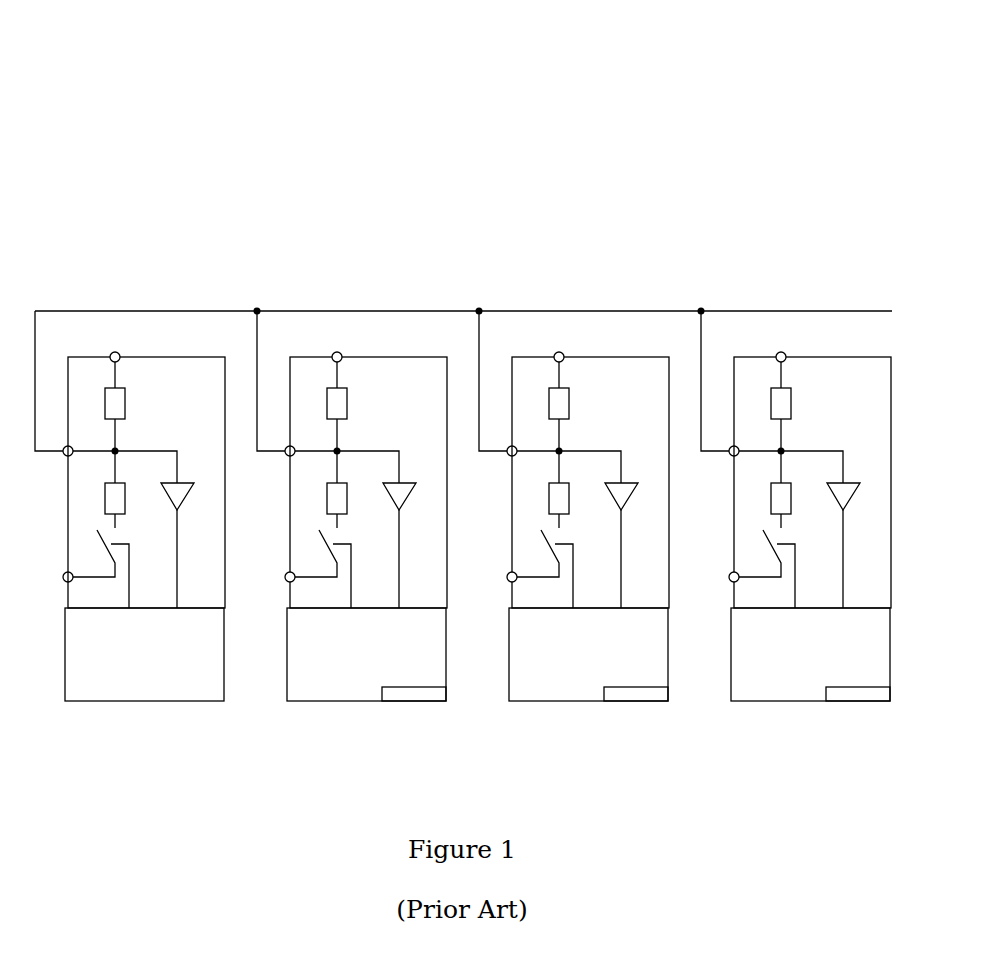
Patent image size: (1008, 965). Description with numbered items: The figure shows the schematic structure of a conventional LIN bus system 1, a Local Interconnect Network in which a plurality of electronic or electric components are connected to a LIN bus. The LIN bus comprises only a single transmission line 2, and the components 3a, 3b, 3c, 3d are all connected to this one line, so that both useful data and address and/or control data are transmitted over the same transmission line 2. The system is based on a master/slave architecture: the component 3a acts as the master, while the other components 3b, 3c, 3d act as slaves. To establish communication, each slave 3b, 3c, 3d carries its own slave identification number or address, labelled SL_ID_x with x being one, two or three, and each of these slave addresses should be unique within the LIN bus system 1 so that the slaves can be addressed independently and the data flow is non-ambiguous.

The LIN bus system 1 is at (520, 72).
The transmission line 2 is at (413, 311).
The component 3a is at (167, 720).
The component 3b is at (382, 716).
The component 3c is at (591, 710).
The component 3d is at (801, 721).